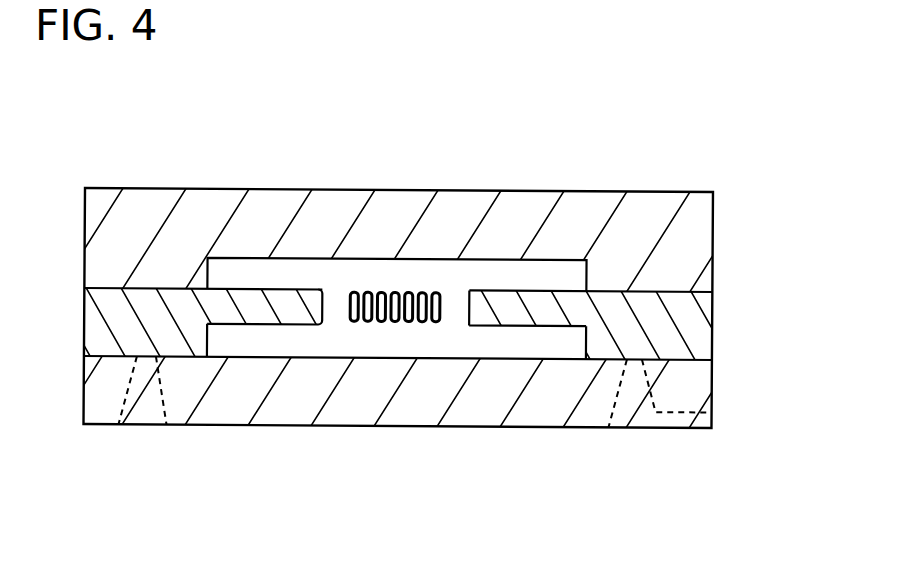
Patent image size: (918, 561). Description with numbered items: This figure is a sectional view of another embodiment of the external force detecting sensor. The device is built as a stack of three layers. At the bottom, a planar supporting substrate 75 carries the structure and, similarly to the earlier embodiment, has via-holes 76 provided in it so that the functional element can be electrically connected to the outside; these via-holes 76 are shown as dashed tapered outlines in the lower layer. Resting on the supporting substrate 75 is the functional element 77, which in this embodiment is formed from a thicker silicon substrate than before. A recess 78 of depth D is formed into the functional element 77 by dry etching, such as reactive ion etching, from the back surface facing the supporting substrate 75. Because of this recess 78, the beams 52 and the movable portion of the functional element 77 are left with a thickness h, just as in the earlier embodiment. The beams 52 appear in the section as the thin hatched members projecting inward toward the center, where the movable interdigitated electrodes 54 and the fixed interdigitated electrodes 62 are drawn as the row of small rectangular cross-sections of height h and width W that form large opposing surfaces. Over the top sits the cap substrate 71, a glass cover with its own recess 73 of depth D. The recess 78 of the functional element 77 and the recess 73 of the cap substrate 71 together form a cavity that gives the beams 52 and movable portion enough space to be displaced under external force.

The cap substrate 71 is at (595, 208).
The recess 73 is at (293, 258).
The recess 78 is at (272, 290).
The functional element 77 is at (712, 305).
The beams 52 is at (243, 298).
The fixed interdigitated electrodes 62 is at (430, 292).
The movable interdigitated electrodes 54 is at (413, 326).
The supporting substrate 75 is at (557, 413).
The via-holes 76 is at (148, 424).